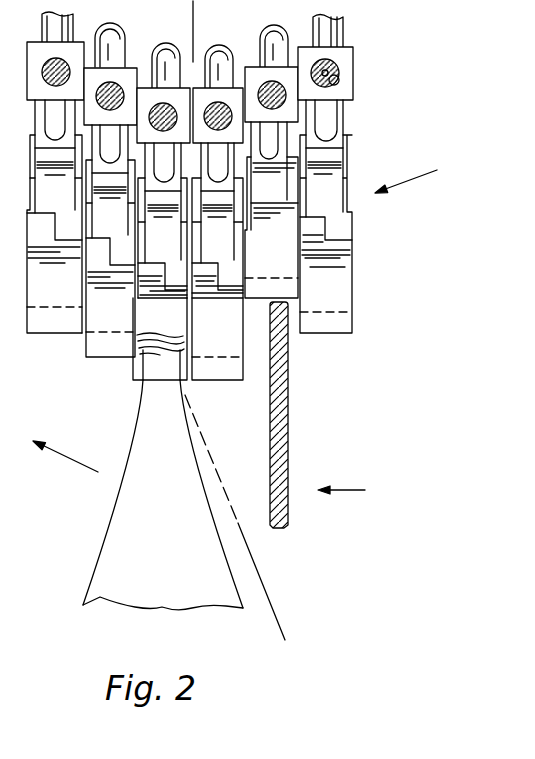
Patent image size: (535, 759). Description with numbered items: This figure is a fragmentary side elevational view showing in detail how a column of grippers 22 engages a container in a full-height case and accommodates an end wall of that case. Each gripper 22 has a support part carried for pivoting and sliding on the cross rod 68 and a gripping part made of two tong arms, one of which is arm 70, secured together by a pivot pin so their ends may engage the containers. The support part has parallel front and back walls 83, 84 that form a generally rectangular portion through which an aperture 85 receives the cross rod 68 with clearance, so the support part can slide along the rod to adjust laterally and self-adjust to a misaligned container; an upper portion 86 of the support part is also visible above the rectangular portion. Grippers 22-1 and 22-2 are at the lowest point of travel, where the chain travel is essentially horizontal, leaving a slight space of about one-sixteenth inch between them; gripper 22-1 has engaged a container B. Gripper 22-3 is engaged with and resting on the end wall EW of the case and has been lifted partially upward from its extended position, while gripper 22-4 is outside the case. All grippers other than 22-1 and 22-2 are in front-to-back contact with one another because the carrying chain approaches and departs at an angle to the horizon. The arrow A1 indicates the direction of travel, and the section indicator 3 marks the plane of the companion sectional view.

The gripper 22 is at (376, 41).
The gripper 22-1 is at (134, 368).
The gripper 22-2 is at (207, 376).
The gripper 22-3 is at (282, 270).
The gripper 22-4 is at (348, 291).
The front wall 83 is at (290, 46).
The contact tab 86 is at (344, 30).
The tong arm 70 is at (353, 52).
The aperture 85 is at (342, 79).
The back wall 84 is at (353, 87).
The rod 68 is at (333, 83).
The end wall EW is at (289, 402).
The direction arrow A1 is at (343, 480).
The container B is at (177, 567).
The section line 3- 3 is at (197, 24).